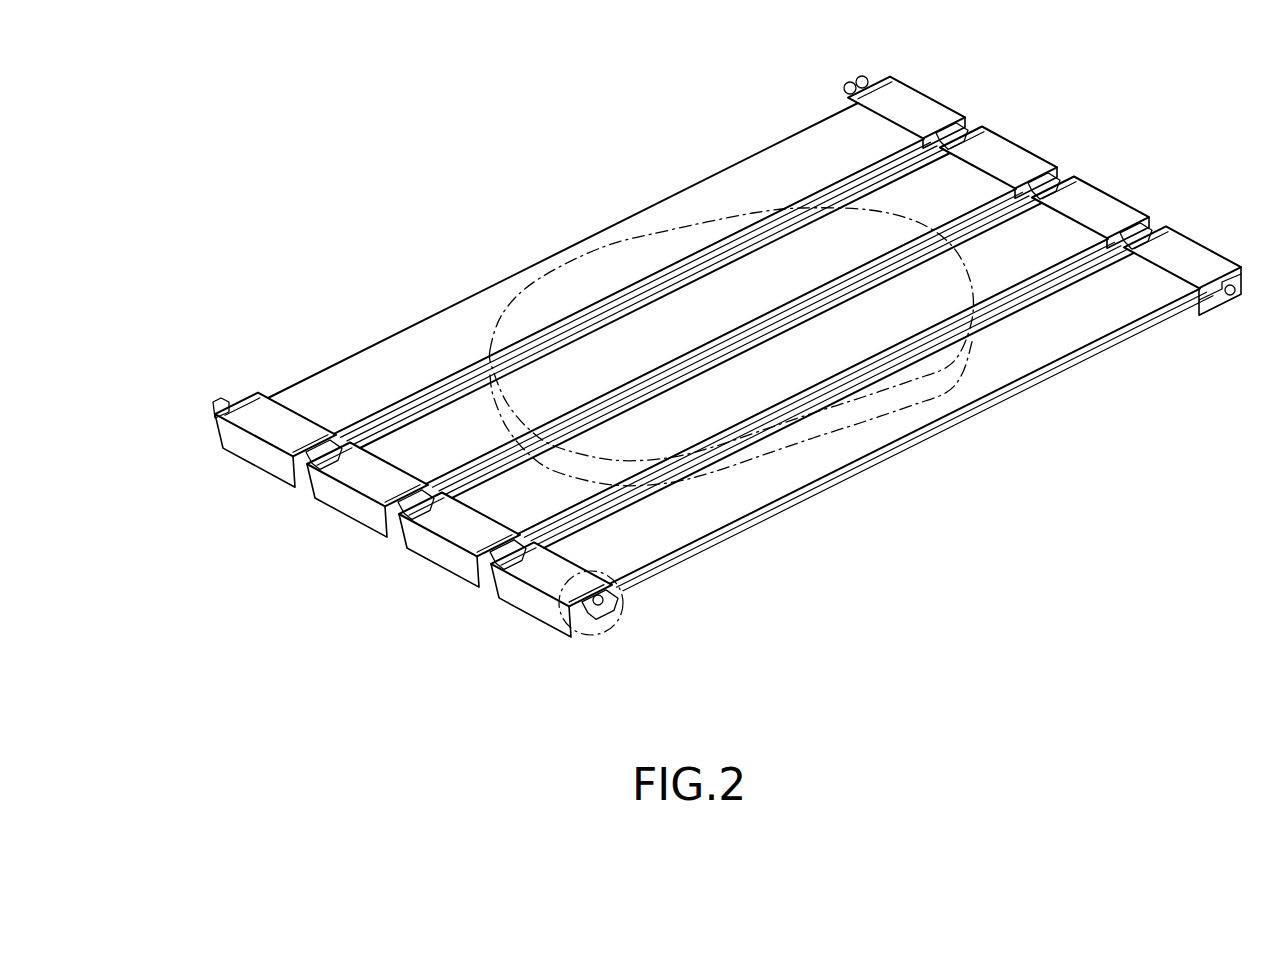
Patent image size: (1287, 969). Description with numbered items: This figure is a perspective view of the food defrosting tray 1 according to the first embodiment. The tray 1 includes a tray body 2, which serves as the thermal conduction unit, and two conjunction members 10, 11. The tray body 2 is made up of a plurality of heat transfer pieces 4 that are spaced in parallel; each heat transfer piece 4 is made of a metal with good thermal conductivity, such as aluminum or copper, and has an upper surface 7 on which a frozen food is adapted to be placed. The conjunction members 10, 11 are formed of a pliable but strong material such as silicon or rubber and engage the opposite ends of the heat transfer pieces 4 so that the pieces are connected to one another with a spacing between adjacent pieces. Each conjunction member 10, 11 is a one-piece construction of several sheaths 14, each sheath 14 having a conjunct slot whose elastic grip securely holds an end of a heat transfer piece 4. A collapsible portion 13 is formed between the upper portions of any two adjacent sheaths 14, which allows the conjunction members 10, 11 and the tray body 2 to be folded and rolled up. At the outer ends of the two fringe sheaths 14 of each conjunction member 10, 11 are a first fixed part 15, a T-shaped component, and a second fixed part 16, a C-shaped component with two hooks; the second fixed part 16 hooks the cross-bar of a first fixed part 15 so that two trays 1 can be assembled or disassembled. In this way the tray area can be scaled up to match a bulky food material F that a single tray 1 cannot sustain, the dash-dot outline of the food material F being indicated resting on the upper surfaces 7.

The food defrosting tray 1 is at (248, 192).
The tray body 2 is at (650, 200).
The heat transfer piece 4 is at (405, 340).
The upper surface 7 is at (705, 490).
The food material F is at (540, 280).
The conjunction member 10 is at (365, 515).
The conjunction member 11 is at (1095, 190).
The collapsible portion 13 is at (478, 555).
The sheath 14 is at (962, 118).
The first fixed part 15 is at (226, 405).
The second fixed part 16 is at (604, 600).